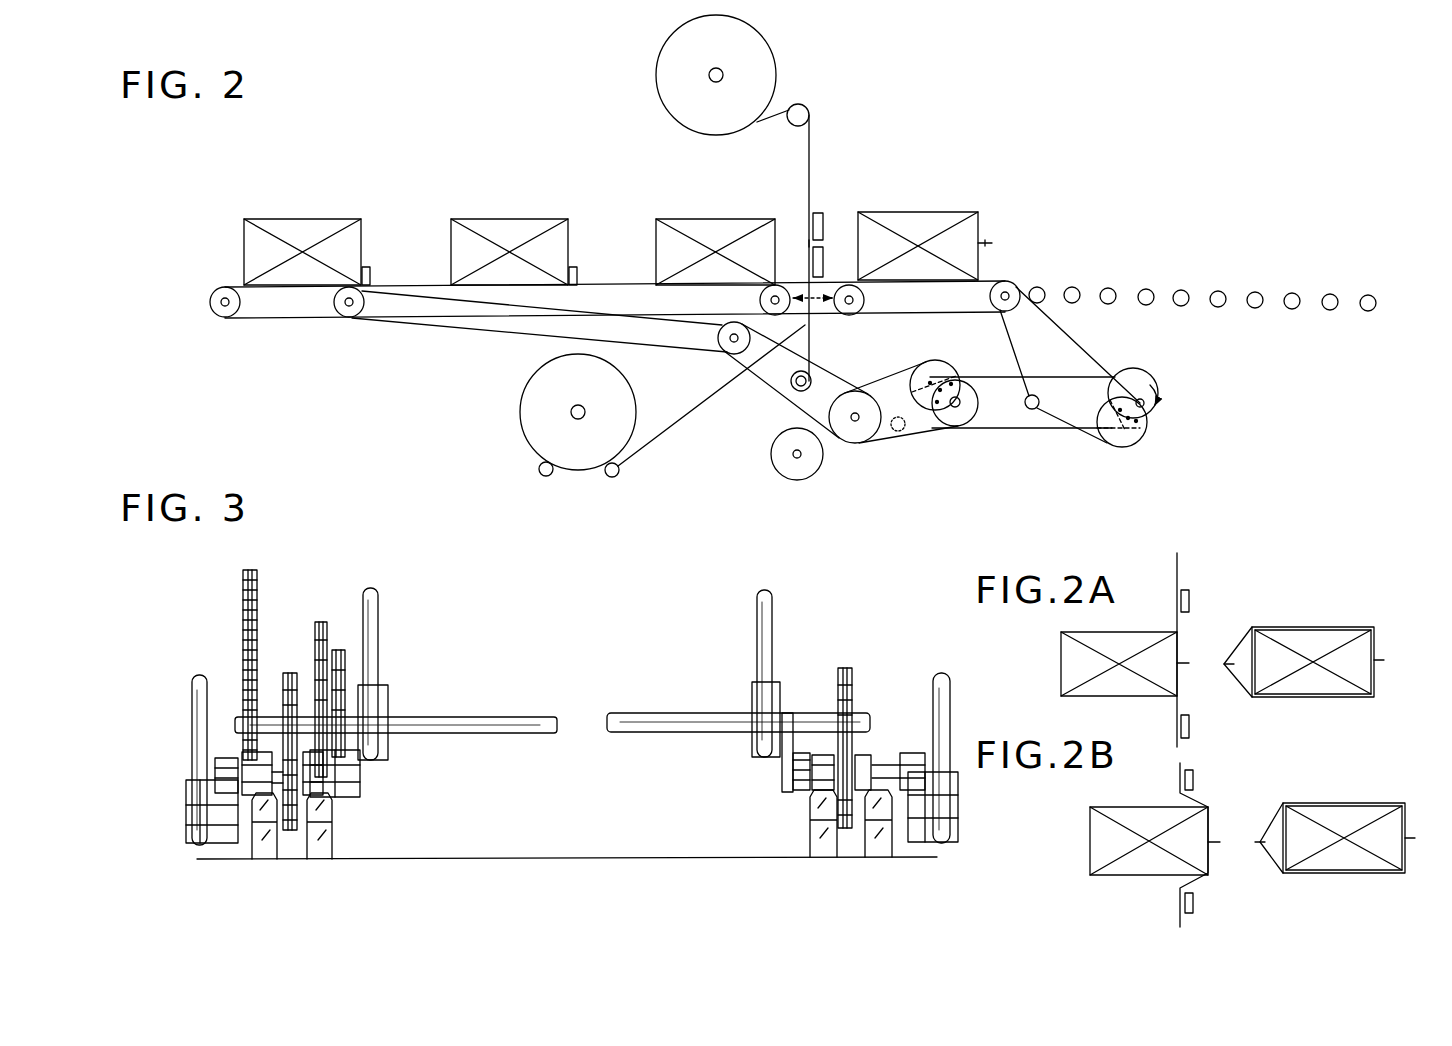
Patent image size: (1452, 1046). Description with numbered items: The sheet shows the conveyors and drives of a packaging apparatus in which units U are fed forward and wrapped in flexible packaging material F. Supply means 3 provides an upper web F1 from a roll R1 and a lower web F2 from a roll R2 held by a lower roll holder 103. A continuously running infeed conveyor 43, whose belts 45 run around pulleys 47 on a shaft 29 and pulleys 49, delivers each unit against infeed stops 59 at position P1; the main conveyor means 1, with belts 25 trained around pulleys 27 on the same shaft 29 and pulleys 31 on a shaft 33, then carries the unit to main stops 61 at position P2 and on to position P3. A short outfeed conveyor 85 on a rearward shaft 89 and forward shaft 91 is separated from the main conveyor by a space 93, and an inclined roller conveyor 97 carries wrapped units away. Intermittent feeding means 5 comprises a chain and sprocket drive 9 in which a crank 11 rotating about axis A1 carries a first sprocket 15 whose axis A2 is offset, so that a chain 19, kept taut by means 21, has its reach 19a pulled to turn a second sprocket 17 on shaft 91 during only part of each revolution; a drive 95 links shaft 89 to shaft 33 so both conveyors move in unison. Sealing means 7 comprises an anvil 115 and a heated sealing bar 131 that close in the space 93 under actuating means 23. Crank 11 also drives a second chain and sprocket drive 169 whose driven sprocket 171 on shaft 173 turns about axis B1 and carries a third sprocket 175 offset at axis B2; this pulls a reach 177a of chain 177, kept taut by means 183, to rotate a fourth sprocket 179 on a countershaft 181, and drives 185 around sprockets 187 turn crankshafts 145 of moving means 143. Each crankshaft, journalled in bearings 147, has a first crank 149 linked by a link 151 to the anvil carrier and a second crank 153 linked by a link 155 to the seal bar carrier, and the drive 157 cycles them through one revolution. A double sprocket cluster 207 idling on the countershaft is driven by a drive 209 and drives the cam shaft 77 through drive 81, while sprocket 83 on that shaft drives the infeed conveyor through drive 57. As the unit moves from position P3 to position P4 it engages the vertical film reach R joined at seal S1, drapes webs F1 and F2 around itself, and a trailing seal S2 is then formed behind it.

In FIG. 2, the main conveyor means 1 is at (436, 324).
In FIG. 2, the packaging material supply means 3 is at (655, 24).
In FIG. 2, the means for effecting intermittent operation of the feeding means 5 is at (1170, 370).
In FIG. 2, the seal forming means 7 is at (830, 212).
In FIG. 2, the chain and sprocket drive 9 is at (1076, 332).
In FIG. 2, the crank 11 is at (1160, 410).
In FIG. 2, the first sprocket 15 is at (1135, 440).
In FIG. 2, the second sprocket 17 is at (1015, 286).
In FIG. 2, the chain 19 is at (1008, 338).
In FIG. 2, the reach of the chain 19a is at (1090, 358).
In FIG. 2, the means for maintaining the chain taut 21 is at (1042, 400).
In FIG. 2, the means for actuating the sealing means 23 is at (946, 446).
In FIG. 2, the endless belts 25 is at (628, 287).
In FIG. 2, the pulleys 27 is at (340, 318).
In FIG. 2, the horizontal shaft 29 is at (365, 302).
In FIG. 2, the pulleys 31 is at (762, 286).
In FIG. 2, the horizontal shaft 33 is at (759, 300).
In FIG. 2, the infeed conveyor 43 is at (238, 320).
In FIG. 2, the endless belts 45 is at (293, 320).
In FIG. 2, the pulleys 47 is at (349, 302).
In FIG. 2, the pulleys 49 is at (210, 302).
In FIG. 2, the chain and sprocket drive 57 is at (511, 340).
In FIG. 2, the infeed stops 59 is at (368, 266).
In FIG. 2, the main stops 61 is at (575, 266).
In FIG. 2, the cam shaft 77 is at (717, 338).
In FIG. 2, the chain and sprocket drive 81 is at (742, 372).
In FIG. 2, the sprocket 83 is at (728, 351).
In FIG. 2, the outfeed conveyor 85 is at (918, 312).
In FIG. 2, the rearward shaft 89 is at (865, 300).
In FIG. 2, the forward shaft 91 is at (989, 296).
In FIG. 2, the space 93 is at (808, 244).
In FIG. 2, the chain and sprocket drive 95 is at (798, 320).
In FIG. 2, the inclined roller conveyor 97 is at (1226, 284).
In FIG. 2, the lower roll holder 103 is at (540, 477).
In FIG. 2, the anvil 115 is at (826, 218).
In FIG. 2A, the anvil 115 is at (1190, 596).
In FIG. 2B, the anvil 115 is at (1194, 785).
In FIG. 2, the sealing bar 131 is at (812, 258).
In FIG. 2A, the sealing bar 131 is at (1190, 732).
In FIG. 2B, the sealing bar 131 is at (1195, 905).
In FIG. 3, the means for moving the anvil and seal bar 143 is at (172, 725).
In FIG. 2, the crankshafts 145 is at (796, 458).
In FIG. 3, the crankshafts 145 is at (320, 797).
In FIG. 3, the bearings 147 is at (262, 875).
In FIG. 3, the first crank 149 is at (220, 850).
In FIG. 3, the link 151 is at (195, 680).
In FIG. 3, the second crank 153 is at (362, 790).
In FIG. 3, the link 155 is at (378, 608).
In FIG. 2, the drive 157 is at (940, 366).
In FIG. 2, the second chain and sprocket drive 169 is at (1040, 432).
In FIG. 2, the driven sprocket 171 is at (962, 406).
In FIG. 2, the shaft 173 is at (960, 428).
In FIG. 2, the third sprocket 175 is at (944, 378).
In FIG. 2, the chain 177 is at (934, 441).
In FIG. 2, the reach of the chain 177a is at (892, 372).
In FIG. 2, the fourth sprocket 179 is at (858, 442).
In FIG. 3, the fourth sprocket 179 is at (243, 630).
In FIG. 2, the countershaft 181 is at (861, 427).
In FIG. 3, the countershaft 181 is at (500, 716).
In FIG. 2, the means for maintaining chain taut 183 is at (910, 410).
In FIG. 2, the chain and sprocket drives 185 is at (836, 472).
In FIG. 3, the chain and sprocket drives 185 is at (292, 672).
In FIG. 2, the sprockets 187 is at (786, 453).
In FIG. 3, the sprockets 187 is at (283, 835).
In FIG. 3, the double sprocket cluster 207 is at (348, 680).
In FIG. 2, the chain and sprocket drive 209 is at (918, 455).
In FIG. 2, the roll of packaging material R1 is at (657, 82).
In FIG. 2, the roll of packaging material R2 is at (522, 428).
In FIG. 2A, the vertical reach of film R is at (1186, 558).
In FIG. 2, the flexible packaging material F is at (815, 140).
In FIG. 2, the upper web F1 is at (812, 172).
In FIG. 2A, the upper web F1 is at (1177, 575).
In FIG. 2B, the upper web F1 is at (1205, 800).
In FIG. 2, the lower web F2 is at (808, 329).
In FIG. 2A, the lower web F2 is at (1177, 730).
In FIG. 2B, the lower web F2 is at (1205, 880).
In FIG. 2, the units U is at (283, 218).
In FIG. 2A, the units U is at (1098, 685).
In FIG. 2B, the units U is at (1355, 870).
In FIG. 2, the position P1 is at (302, 213).
In FIG. 2, the position P2 is at (509, 213).
In FIG. 2, the position P3 is at (715, 216).
In FIG. 2, the position P4 is at (918, 223).
In FIG. 2A, the heat seal S1 is at (1186, 665).
In FIG. 2B, the heat seal S1 is at (1220, 845).
In FIG. 2, the trailing seal S2 is at (993, 243).
In FIG. 2A, the trailing seal S2 is at (1228, 667).
In FIG. 2B, the trailing seal S2 is at (1262, 840).
In FIG. 2, the crank axis A1 is at (1158, 393).
In FIG. 2, the sprocket axis A2 is at (1120, 440).
In FIG. 2, the axis of shaft 173 B1 is at (962, 400).
In FIG. 2, the axis of sprocket 175 B2 is at (935, 385).